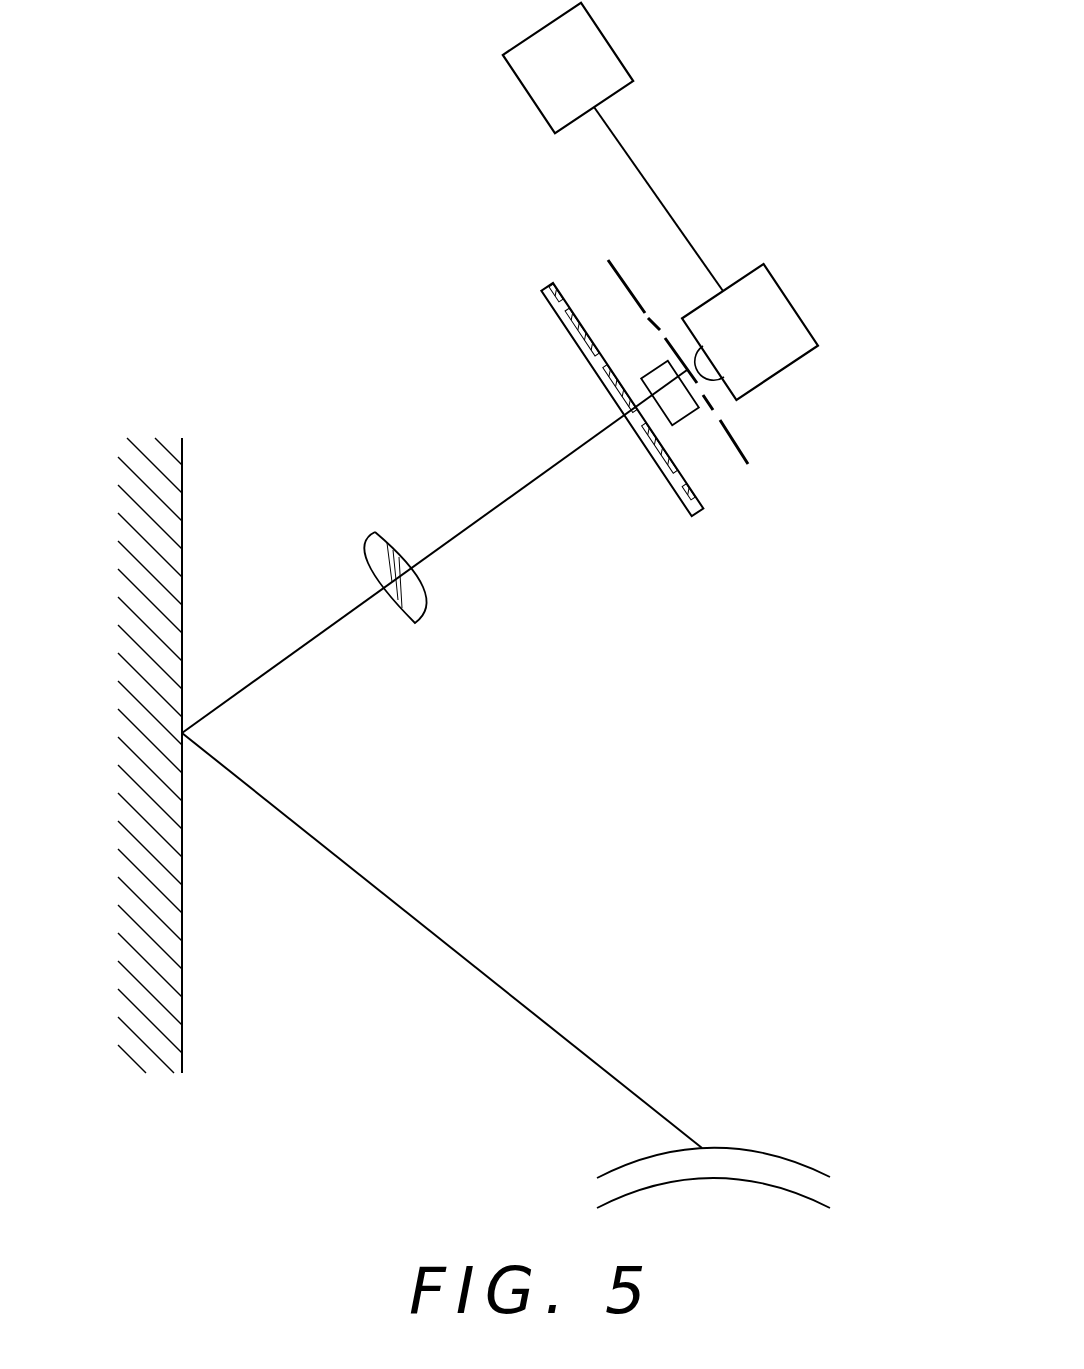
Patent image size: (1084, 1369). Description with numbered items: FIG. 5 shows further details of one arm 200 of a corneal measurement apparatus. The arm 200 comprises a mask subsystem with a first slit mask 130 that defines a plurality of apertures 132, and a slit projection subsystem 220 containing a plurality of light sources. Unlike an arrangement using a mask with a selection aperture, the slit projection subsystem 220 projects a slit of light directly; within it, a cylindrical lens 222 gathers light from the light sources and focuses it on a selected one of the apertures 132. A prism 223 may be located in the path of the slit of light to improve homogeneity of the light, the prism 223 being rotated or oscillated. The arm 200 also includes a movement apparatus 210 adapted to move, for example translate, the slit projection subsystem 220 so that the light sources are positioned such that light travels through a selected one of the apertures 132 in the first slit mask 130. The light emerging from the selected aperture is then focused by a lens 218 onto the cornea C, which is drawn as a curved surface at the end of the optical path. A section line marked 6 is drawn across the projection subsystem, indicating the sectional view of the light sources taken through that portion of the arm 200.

The arm 200 is at (303, 180).
The movement apparatus 210 is at (607, 43).
The slit projection subsystem 220 is at (738, 233).
The cylindrical lens 222 is at (693, 347).
The prism 223 is at (650, 372).
The first slit mask 130 is at (538, 291).
The apertures 132 is at (680, 470).
The lens 218 is at (415, 623).
The section line 6- 6 is at (605, 268).
The cornea C is at (747, 1148).